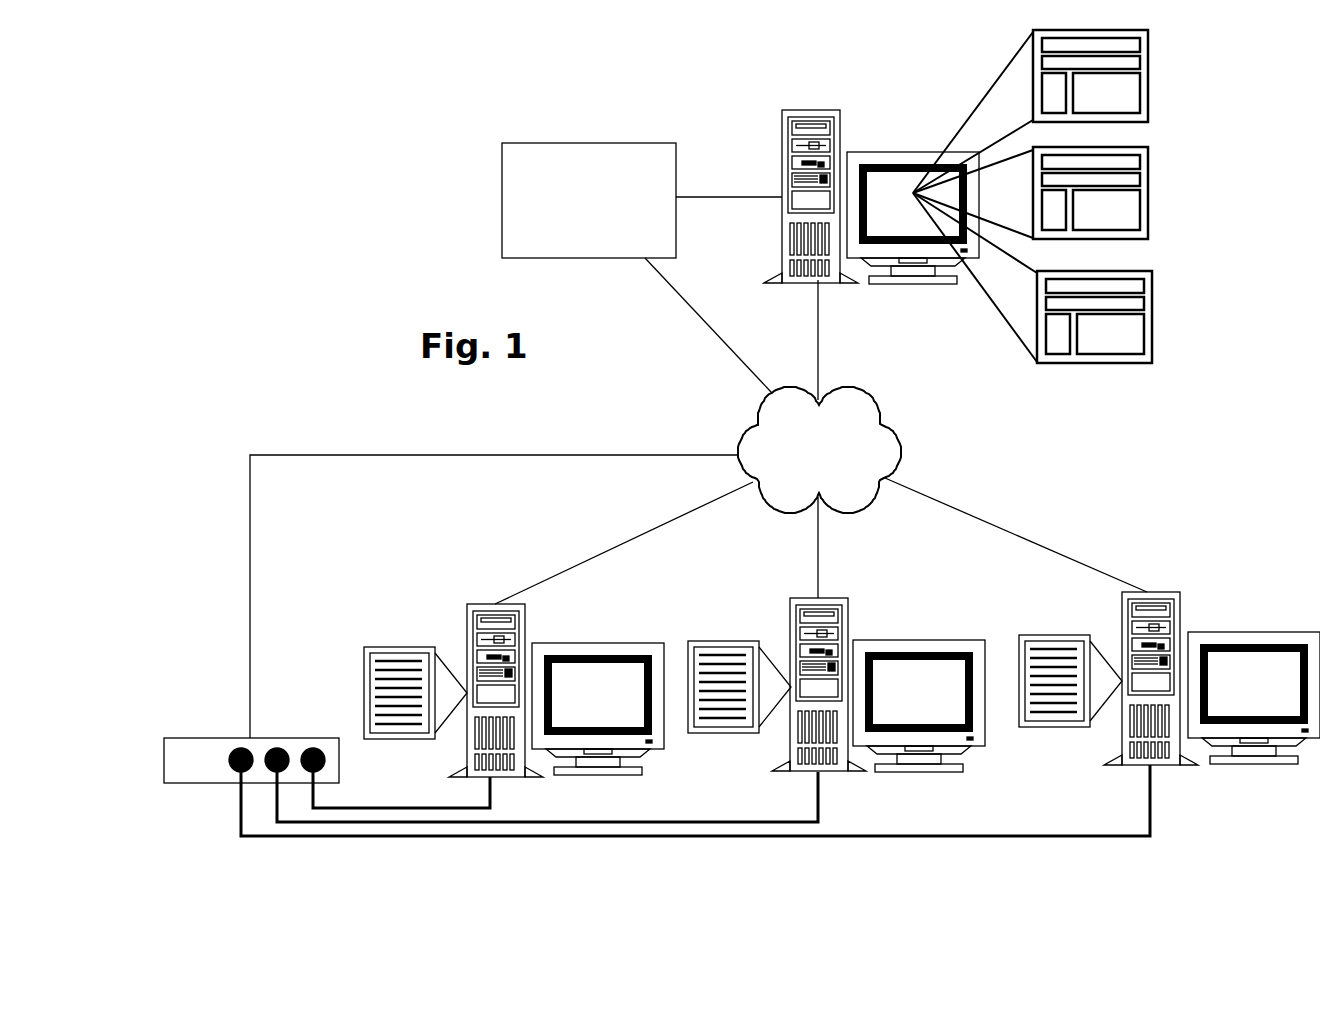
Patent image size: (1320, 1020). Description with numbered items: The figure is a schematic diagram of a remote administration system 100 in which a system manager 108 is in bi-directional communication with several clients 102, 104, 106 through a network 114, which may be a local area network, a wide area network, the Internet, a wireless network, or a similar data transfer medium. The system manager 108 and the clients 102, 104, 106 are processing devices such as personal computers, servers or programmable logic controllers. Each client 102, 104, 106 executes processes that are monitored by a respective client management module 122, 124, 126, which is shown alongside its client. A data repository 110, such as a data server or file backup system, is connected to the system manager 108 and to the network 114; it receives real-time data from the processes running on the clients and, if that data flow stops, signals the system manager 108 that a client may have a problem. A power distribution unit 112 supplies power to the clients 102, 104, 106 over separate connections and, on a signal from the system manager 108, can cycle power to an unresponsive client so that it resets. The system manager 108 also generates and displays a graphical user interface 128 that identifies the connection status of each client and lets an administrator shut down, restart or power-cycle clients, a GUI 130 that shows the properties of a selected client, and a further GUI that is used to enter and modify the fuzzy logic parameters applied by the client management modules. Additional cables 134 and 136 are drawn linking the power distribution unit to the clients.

The remote administration system 100 is at (698, 467).
The client 102 is at (527, 620).
The client 104 is at (850, 626).
The client 106 is at (1183, 618).
The system manager 108 is at (842, 137).
The data repository 110 is at (589, 200).
The power distribution unit 112 is at (280, 738).
The network 114 is at (819, 450).
The client management module 122 is at (400, 647).
The client management module 124 is at (723, 641).
The client management module 126 is at (1055, 635).
The graphical user interface 128 is at (1148, 68).
The GUI 130 is at (1149, 185).
The cable connection 134 is at (380, 824).
The cable connection 136 is at (455, 838).